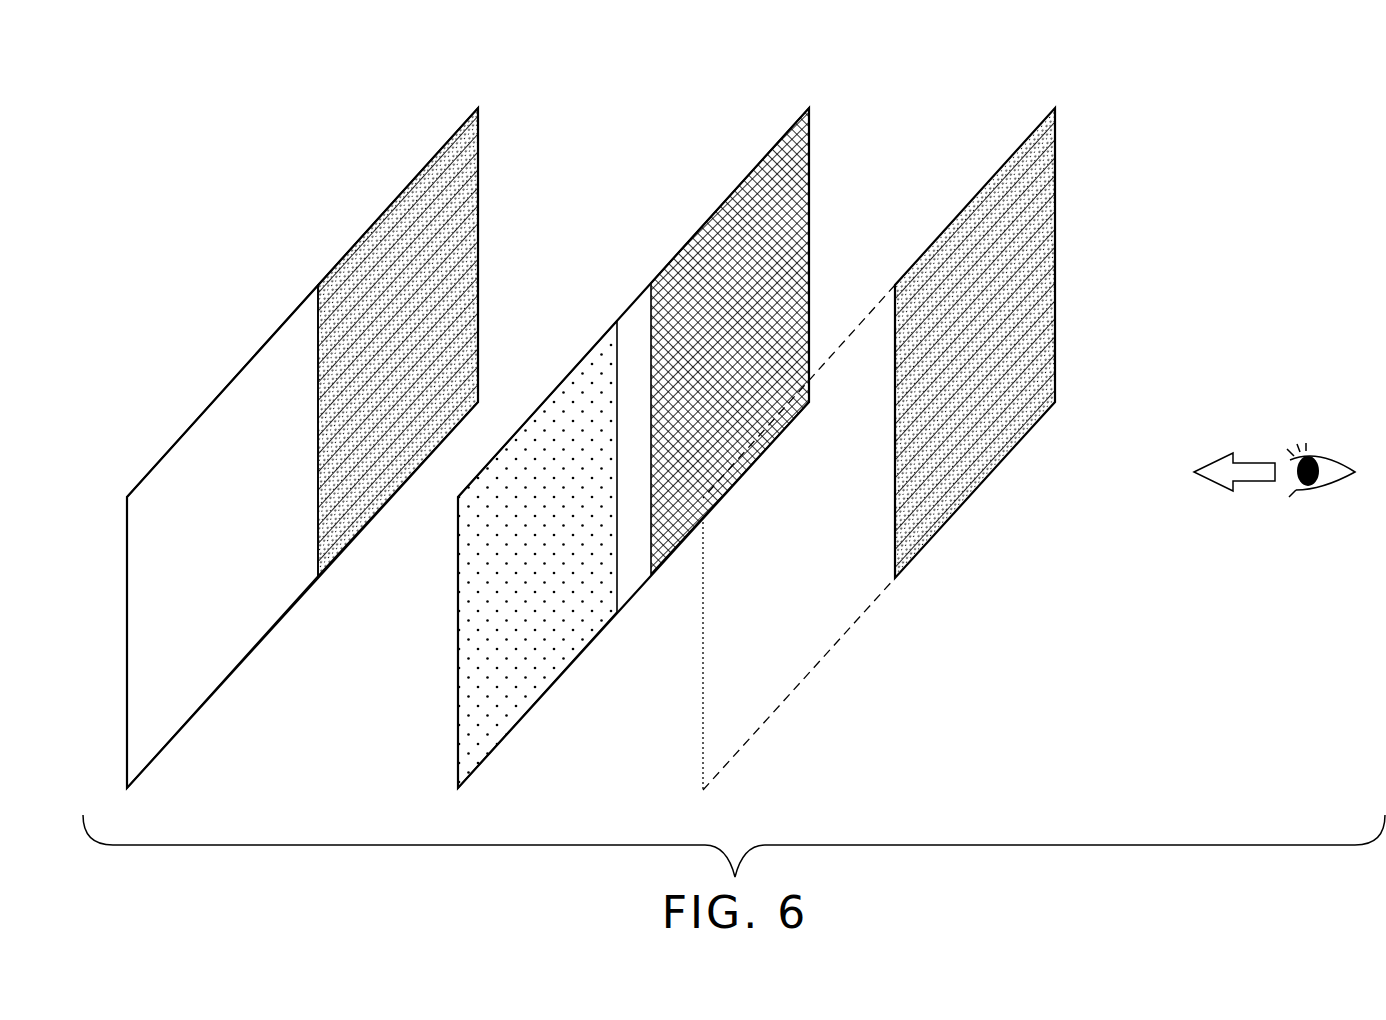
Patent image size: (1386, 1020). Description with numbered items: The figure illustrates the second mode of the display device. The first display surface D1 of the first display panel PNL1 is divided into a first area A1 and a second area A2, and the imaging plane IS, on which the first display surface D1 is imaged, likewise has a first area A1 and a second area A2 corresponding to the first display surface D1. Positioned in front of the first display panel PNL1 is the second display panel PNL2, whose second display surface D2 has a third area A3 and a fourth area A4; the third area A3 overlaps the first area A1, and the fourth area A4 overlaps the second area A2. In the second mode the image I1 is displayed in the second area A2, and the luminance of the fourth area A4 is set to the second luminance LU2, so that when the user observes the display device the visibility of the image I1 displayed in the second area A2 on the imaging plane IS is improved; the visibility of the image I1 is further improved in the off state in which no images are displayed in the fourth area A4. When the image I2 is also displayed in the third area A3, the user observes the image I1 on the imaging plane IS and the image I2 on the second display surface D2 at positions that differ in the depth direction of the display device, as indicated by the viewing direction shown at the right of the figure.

The first display surface D1 is at (327, 402).
The first display panel PNL1 is at (478, 108).
The second display surface D2 is at (658, 402).
The second display panel PNL2 is at (809, 108).
The imaging plane IS is at (1055, 108).
The first area A1 is at (198, 458).
The second area A2 is at (697, 355).
The third area A3 is at (537, 554).
The fourth area A4 is at (727, 341).
The second luminance LU2 is at (712, 246).
The image I1 is at (372, 508).
The image I2 is at (565, 660).